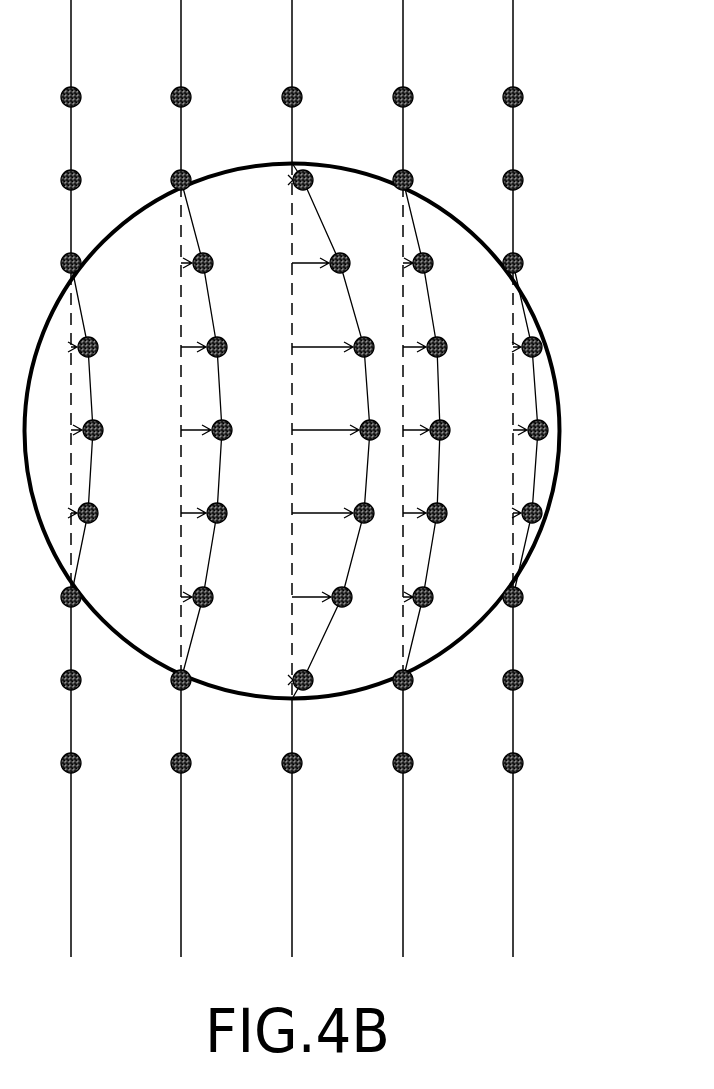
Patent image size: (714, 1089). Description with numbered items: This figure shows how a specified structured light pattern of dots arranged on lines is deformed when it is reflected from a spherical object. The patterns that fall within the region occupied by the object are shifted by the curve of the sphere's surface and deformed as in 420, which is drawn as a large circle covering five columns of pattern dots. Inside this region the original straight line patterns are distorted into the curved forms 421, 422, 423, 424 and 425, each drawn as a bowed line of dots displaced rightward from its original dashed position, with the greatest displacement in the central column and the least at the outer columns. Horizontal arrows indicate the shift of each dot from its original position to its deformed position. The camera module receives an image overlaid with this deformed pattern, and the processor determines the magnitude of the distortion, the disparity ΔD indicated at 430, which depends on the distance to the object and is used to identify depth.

The deformed pattern region 420 is at (531, 308).
The first deformed pattern 421 is at (83, 322).
The second deformed pattern 422 is at (210, 306).
The third deformed pattern 423 is at (335, 242).
The fourth deformed pattern 424 is at (432, 308).
The fifth deformed pattern 425 is at (535, 377).
The disparity magnitude 430 is at (318, 430).